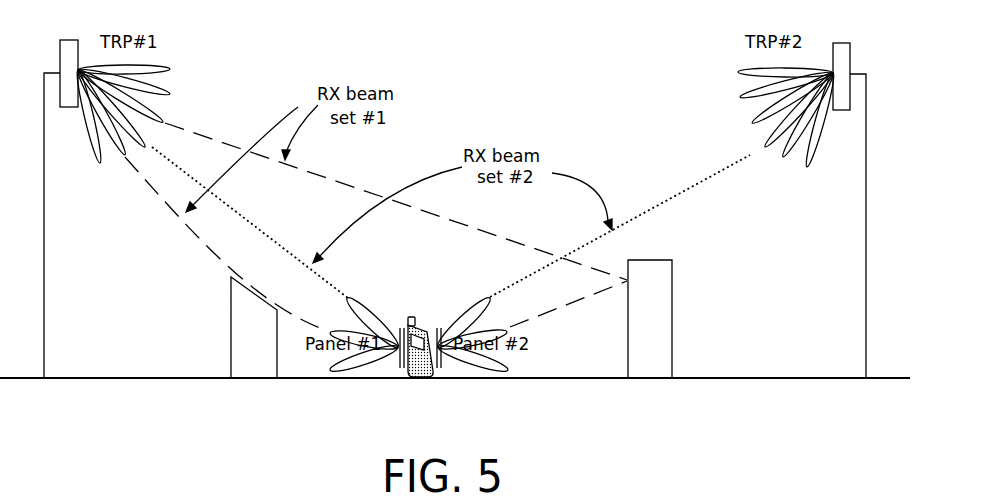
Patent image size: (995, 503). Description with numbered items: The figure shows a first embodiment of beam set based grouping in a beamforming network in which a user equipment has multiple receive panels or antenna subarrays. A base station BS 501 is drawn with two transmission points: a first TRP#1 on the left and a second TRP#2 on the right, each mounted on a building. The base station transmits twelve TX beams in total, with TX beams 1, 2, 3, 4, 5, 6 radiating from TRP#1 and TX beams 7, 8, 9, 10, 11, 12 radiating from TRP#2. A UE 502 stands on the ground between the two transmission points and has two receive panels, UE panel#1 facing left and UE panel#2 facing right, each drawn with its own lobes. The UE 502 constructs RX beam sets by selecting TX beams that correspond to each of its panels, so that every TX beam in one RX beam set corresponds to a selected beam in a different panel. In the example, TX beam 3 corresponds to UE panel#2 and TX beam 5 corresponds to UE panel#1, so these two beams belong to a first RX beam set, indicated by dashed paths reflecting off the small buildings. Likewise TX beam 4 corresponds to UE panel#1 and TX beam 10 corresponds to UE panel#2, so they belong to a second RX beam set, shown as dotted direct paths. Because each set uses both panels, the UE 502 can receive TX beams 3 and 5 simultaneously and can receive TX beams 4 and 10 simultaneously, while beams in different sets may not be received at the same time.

The BS 501 is at (67, 40).
The UE 502 is at (411, 318).
The TX beam # 1 is at (133, 72).
The TX beam # 2 is at (133, 86).
The TX beam # 3 is at (123, 101).
The TX beam # 4 is at (114, 113).
The TX beam # 5 is at (105, 126).
The TX beam # 6 is at (89, 127).
The TX beam # 7 is at (776, 72).
The TX beam # 8 is at (777, 88).
The TX beam # 9 is at (786, 101).
The TX beam # 10 is at (793, 116).
The TX beam # 11 is at (802, 125).
The TX beam # 12 is at (818, 131).